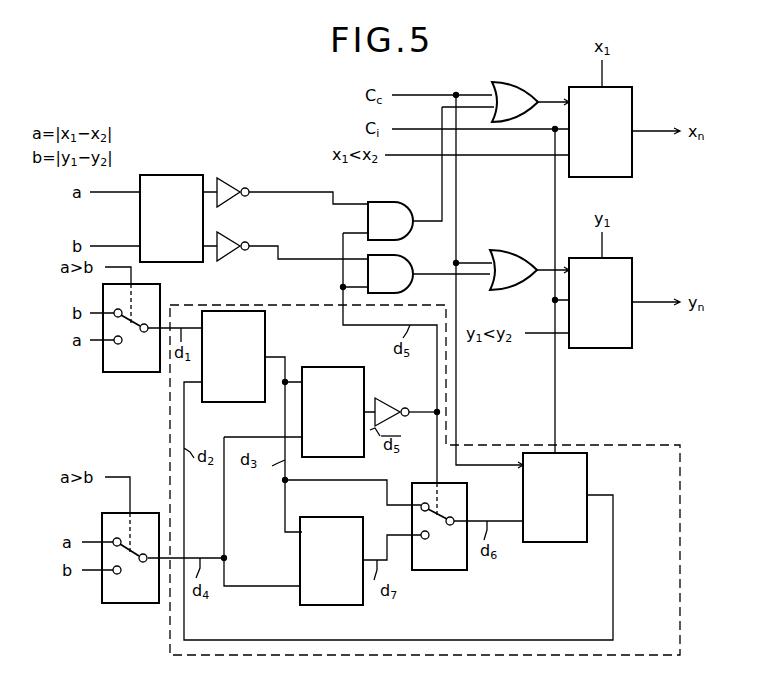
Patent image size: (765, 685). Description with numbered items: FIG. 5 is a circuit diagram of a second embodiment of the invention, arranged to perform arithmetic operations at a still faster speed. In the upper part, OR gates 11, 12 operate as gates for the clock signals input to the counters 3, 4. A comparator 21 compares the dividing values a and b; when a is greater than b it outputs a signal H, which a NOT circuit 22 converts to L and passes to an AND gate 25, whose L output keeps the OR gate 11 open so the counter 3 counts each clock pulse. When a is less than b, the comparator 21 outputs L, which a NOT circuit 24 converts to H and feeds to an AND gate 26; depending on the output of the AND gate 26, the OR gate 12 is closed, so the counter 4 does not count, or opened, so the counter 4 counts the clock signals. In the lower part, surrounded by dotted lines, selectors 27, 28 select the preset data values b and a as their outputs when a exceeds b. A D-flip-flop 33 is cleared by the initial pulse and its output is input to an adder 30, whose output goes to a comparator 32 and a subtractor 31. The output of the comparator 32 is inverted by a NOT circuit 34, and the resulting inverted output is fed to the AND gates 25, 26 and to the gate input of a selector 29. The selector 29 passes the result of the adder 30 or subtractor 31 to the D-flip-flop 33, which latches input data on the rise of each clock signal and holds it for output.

The counter 3 is at (632, 90).
The counter 4 is at (632, 348).
The OR gate 11 is at (508, 82).
The OR gate 12 is at (512, 250).
The comparator 21 is at (172, 175).
The NOT circuit 22 is at (236, 178).
The NOT circuit 24 is at (232, 259).
The AND gate 25 is at (403, 203).
The AND gate 26 is at (405, 256).
The selector 27 is at (103, 372).
The selector 28 is at (128, 603).
The selector 29 is at (445, 570).
The adder 30 is at (265, 321).
The subtractor 31 is at (343, 605).
The comparator 32 is at (317, 367).
The D-flip-flop 33 is at (587, 470).
The NOT circuit 34 is at (390, 402).